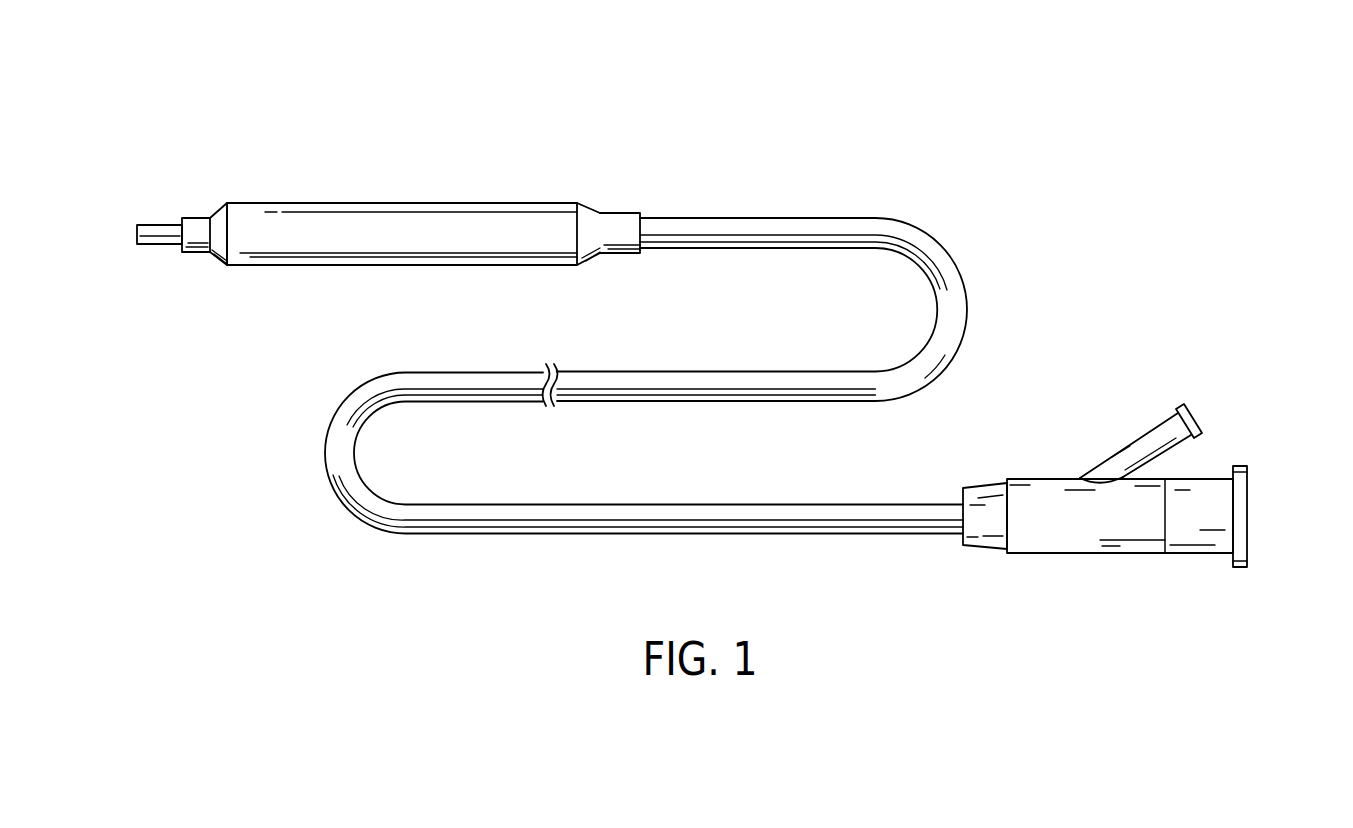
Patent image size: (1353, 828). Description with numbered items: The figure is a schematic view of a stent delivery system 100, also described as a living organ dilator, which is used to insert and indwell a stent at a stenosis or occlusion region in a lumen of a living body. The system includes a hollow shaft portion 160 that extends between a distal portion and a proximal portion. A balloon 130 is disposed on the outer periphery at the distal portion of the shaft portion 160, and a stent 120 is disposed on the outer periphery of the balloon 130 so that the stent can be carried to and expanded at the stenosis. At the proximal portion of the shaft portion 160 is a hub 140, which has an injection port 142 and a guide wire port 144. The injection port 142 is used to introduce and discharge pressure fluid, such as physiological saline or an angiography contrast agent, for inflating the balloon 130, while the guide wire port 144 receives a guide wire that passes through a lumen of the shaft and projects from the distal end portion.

The stent delivery system 100 is at (133, 88).
The stent 120 is at (433, 208).
The balloon 130 is at (618, 219).
The shaft portion 160 is at (826, 220).
The hub 140 is at (1040, 480).
The injection port 142 is at (1148, 435).
The guide wire port 144 is at (1249, 493).